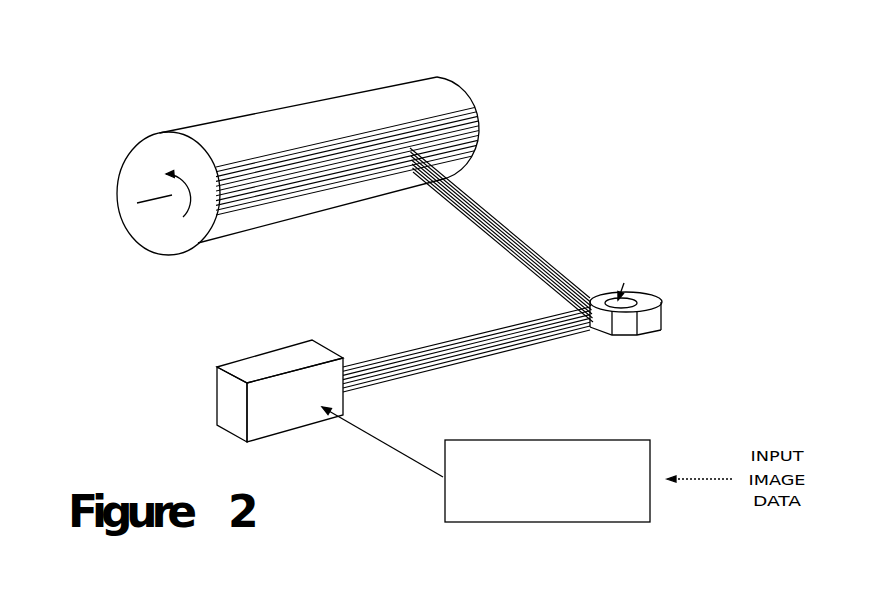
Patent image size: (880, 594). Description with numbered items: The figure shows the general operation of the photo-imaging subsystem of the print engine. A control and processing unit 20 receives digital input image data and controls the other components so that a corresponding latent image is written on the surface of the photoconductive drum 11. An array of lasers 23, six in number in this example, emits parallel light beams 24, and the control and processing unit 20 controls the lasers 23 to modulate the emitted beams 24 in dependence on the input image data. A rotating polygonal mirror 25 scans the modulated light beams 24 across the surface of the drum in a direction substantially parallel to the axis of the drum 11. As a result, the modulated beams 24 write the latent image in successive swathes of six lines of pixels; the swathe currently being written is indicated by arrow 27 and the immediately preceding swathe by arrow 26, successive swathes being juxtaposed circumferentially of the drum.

The photoconductive drum 11 is at (240, 117).
The immediately preceding swathe 26 is at (437, 110).
The swathe currently being written 27 is at (400, 182).
The rotating polygonal mirror 25 is at (647, 300).
The parallel light beams 24 is at (402, 347).
The array of lasers 23 is at (272, 362).
The control and processing unit 20 is at (548, 440).